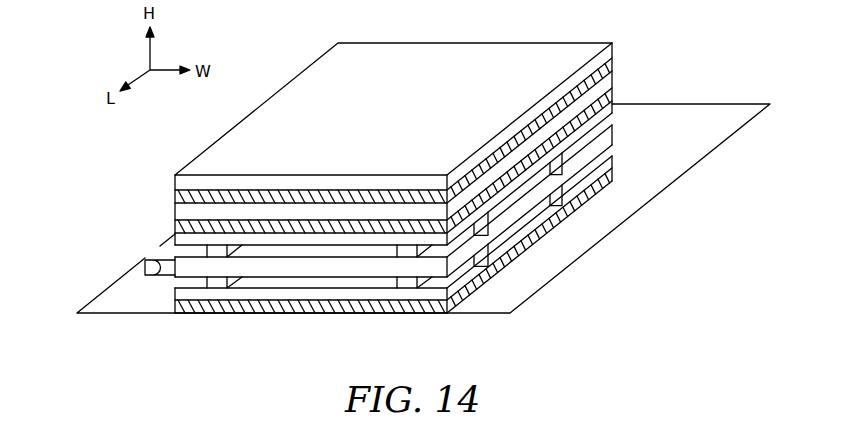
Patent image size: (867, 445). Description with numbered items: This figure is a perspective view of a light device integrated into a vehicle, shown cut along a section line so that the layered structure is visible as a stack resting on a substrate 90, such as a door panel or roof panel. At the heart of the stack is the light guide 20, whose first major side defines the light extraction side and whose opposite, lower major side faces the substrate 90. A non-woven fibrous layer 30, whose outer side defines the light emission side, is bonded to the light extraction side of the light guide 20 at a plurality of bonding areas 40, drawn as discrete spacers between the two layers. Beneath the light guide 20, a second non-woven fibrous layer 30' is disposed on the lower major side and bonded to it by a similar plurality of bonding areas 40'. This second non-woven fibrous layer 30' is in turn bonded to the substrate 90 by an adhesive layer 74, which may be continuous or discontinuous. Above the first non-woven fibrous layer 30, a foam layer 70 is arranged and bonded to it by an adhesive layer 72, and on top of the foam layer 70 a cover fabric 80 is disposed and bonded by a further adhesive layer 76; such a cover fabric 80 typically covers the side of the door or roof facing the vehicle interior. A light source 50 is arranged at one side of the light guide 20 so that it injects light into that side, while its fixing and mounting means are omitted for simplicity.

The cover fabric 80 is at (612, 44).
The adhesive layer 76 is at (612, 64).
The foam layer 70 is at (612, 80).
The adhesive layer 72 is at (612, 96).
The non-woven fibrous layer 30 is at (419, 175).
The bonding areas 40 is at (369, 258).
The light guide 20 is at (612, 135).
The bonding areas 40' is at (384, 274).
The second non-woven fibrous layer 30' is at (420, 228).
The adhesive layer 74 is at (258, 315).
The light source 50 is at (145, 265).
The substrate 90 is at (745, 104).